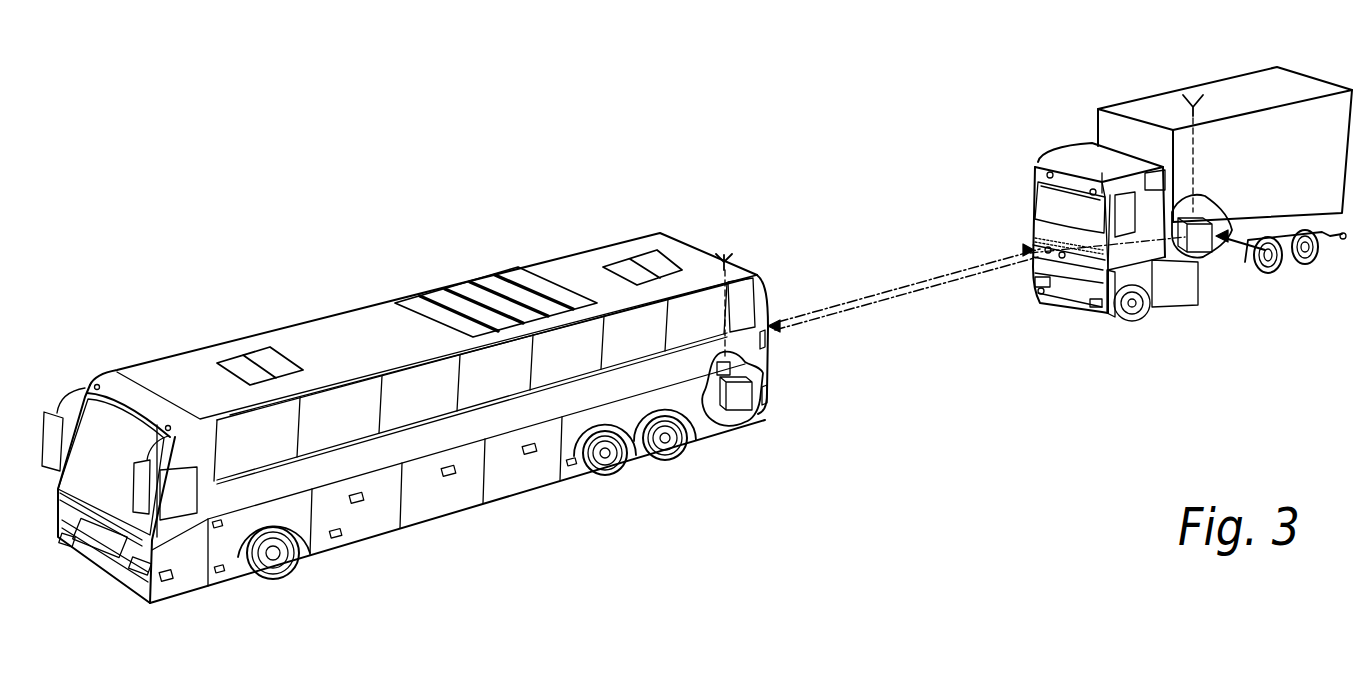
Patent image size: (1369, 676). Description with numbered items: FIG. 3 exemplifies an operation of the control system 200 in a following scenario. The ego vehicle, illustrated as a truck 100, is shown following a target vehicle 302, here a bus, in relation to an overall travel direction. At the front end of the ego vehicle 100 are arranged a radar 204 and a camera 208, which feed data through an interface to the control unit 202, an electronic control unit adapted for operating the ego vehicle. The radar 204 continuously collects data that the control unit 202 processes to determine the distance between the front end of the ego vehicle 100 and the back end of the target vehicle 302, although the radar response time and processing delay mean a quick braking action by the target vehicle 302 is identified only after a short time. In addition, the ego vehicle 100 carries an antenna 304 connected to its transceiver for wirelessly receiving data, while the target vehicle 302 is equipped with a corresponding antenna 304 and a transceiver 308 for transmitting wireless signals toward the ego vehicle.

The truck 100 is at (1250, 86).
The control system 200 is at (1268, 272).
The control unit 202 is at (1210, 258).
The radar 204 is at (1043, 250).
The camera 208 is at (1042, 292).
The target vehicle 302 is at (586, 262).
The antenna 304 is at (737, 263).
The transceiver 308 is at (768, 370).